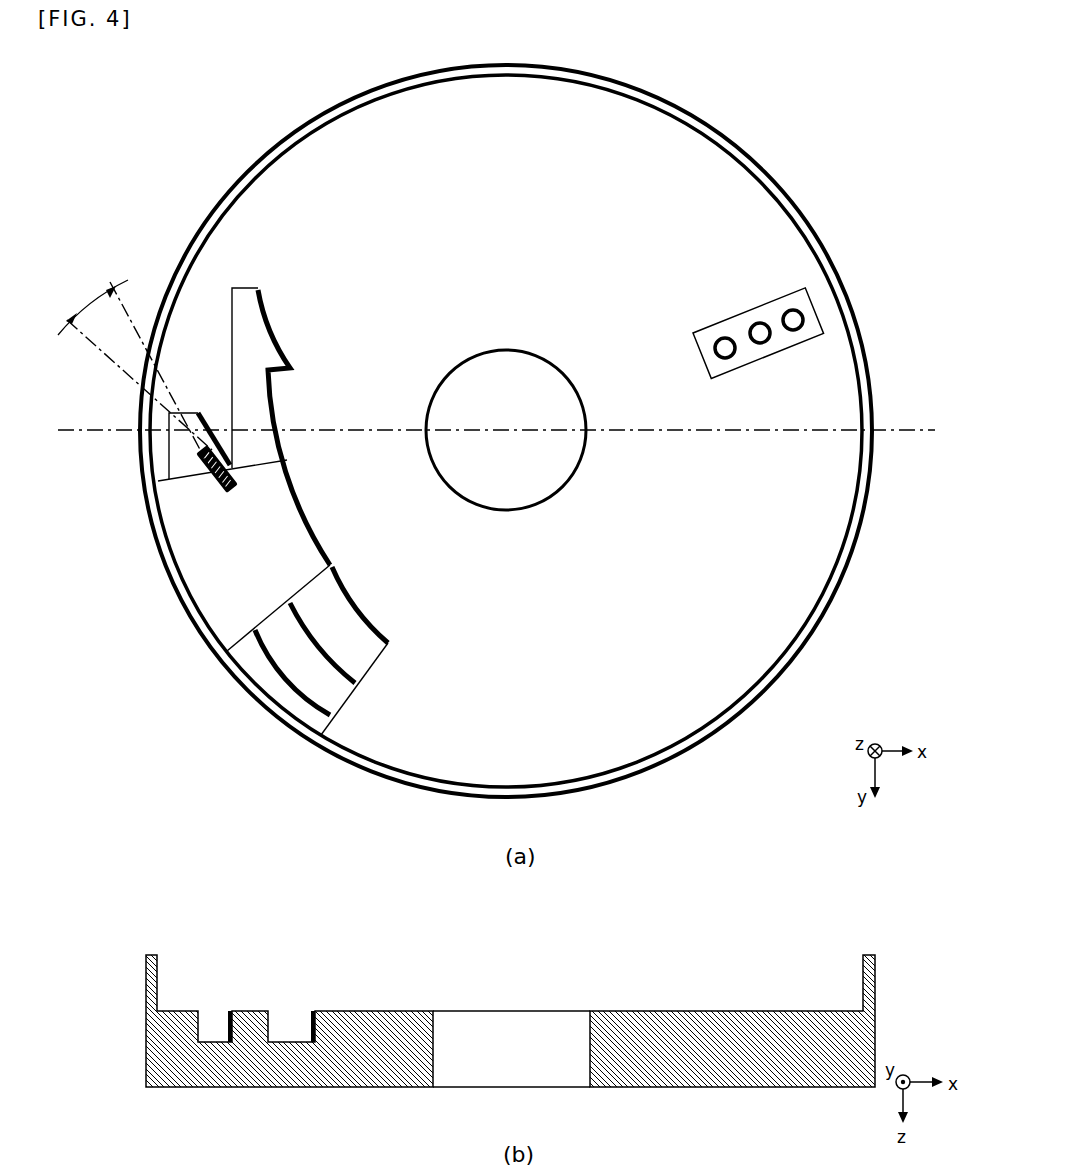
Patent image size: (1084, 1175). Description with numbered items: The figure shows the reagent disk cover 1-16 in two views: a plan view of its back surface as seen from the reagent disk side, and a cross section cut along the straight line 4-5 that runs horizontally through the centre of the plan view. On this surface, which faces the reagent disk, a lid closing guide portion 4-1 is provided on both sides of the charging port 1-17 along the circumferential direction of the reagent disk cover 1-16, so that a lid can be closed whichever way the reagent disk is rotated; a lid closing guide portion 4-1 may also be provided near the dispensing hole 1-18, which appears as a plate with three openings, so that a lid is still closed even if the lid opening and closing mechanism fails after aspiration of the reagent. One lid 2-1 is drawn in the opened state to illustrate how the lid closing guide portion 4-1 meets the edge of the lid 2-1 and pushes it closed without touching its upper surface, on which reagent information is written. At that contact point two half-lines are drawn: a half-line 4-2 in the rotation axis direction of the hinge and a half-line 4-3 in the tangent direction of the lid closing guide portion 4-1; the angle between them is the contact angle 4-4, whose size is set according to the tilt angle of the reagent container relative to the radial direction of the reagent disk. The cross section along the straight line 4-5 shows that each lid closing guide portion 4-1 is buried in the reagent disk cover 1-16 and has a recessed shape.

The reagent disk cover 1-16 is at (286, 113).
The charging port 1-17 is at (217, 563).
The dispensing hole 1-18 is at (760, 330).
The lid 2-1 is at (217, 483).
The lid closing guide portion 4-1 is at (270, 348).
The half-line in the rotation axis direction of the hinge 4-2 is at (131, 318).
The half-line in the tangent direction of the lid closing guide portion 4-3 is at (122, 367).
The contact angle 4-4 is at (73, 316).
The straight line 4-5 is at (897, 430).